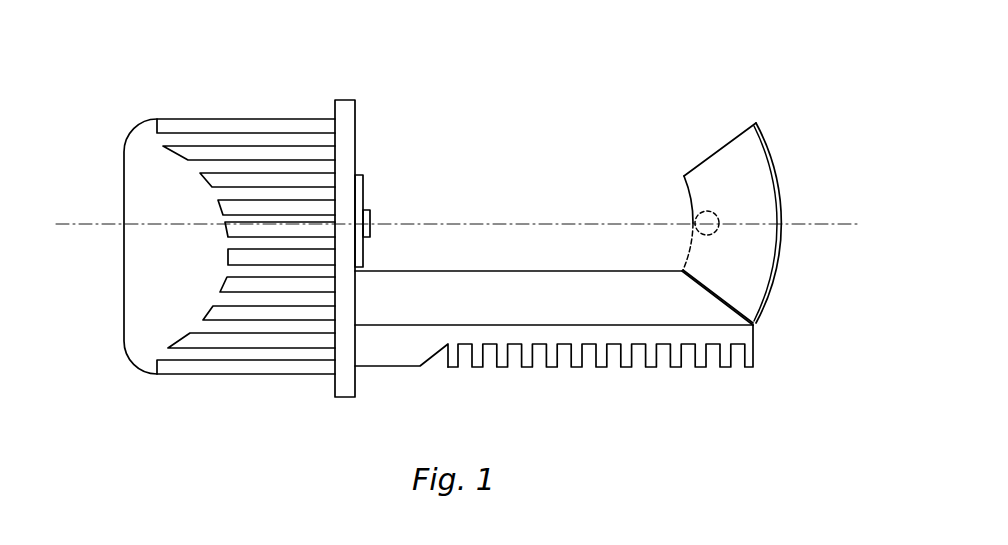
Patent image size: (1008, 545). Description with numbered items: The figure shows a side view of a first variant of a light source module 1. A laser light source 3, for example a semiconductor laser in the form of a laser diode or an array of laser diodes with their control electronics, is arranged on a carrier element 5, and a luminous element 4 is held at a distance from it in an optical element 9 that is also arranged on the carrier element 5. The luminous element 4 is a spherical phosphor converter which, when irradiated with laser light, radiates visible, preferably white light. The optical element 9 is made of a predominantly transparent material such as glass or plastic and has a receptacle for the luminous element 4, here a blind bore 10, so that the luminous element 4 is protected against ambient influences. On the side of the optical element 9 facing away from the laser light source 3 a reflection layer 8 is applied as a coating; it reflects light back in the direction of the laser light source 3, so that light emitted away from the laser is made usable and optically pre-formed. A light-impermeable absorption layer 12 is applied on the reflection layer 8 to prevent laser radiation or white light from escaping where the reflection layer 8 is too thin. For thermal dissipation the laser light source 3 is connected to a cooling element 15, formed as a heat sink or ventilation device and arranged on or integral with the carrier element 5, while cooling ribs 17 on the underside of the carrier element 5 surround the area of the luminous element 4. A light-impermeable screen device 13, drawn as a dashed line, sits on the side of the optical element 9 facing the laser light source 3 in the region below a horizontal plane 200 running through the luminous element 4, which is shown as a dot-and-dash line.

The light source module 1 is at (520, 88).
The horizontal plane 200 is at (103, 224).
The cooling element 15 is at (150, 270).
The laser light source 3 is at (368, 208).
The carrier element 5 is at (367, 347).
The cooling ribs 17 is at (753, 378).
The optical element 9 is at (717, 177).
The reflection layer 8 is at (767, 155).
The absorption layer 12 is at (772, 293).
The blind bore 10 is at (720, 228).
The screen device 13 is at (683, 255).
The luminous element 4 is at (703, 218).